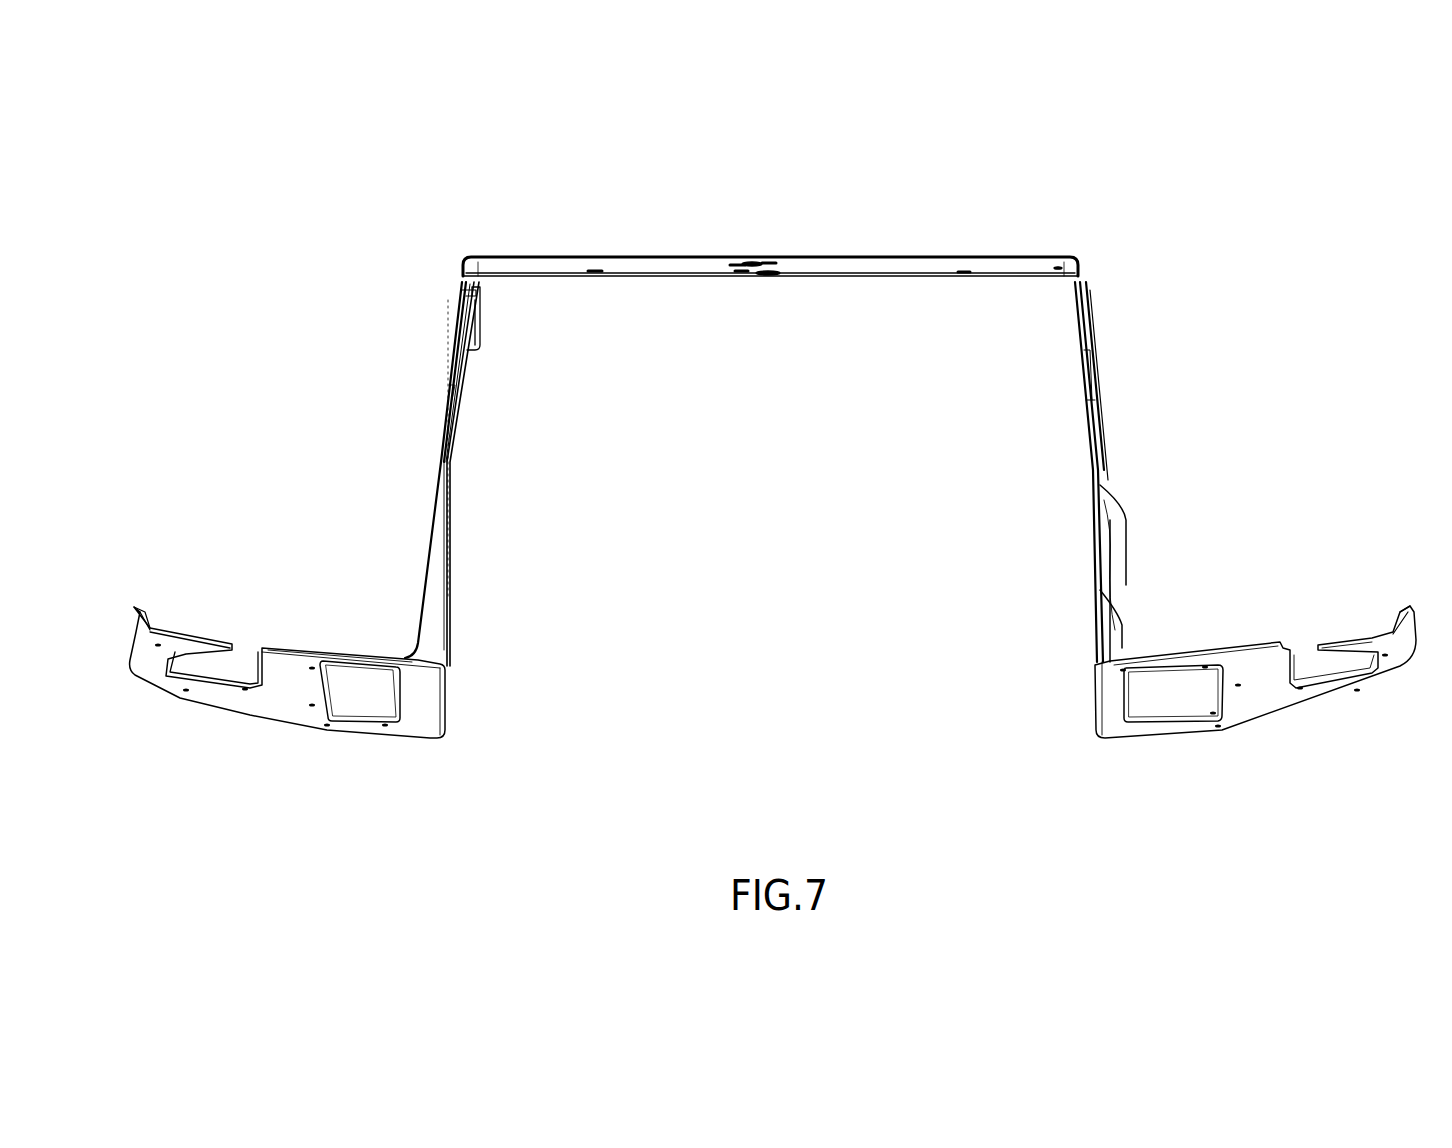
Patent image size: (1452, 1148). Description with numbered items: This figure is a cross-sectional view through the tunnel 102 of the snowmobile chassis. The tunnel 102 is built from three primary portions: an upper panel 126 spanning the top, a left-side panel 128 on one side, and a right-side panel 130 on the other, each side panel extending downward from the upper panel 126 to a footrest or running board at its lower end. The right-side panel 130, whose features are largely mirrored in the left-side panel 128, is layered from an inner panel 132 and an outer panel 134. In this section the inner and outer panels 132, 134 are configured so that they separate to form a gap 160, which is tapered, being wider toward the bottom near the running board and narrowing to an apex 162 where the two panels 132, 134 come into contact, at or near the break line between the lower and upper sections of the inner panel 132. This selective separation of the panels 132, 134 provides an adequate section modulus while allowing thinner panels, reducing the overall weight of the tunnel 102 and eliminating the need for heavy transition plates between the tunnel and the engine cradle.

The tunnel 102 is at (1095, 127).
The upper panel 126 is at (784, 252).
The left-side panel 128 is at (1116, 247).
The right-side panel 130 is at (437, 246).
The inner panel 132 is at (453, 565).
The outer panel 134 is at (430, 535).
The gap 160 is at (432, 621).
The apex 162 is at (448, 500).